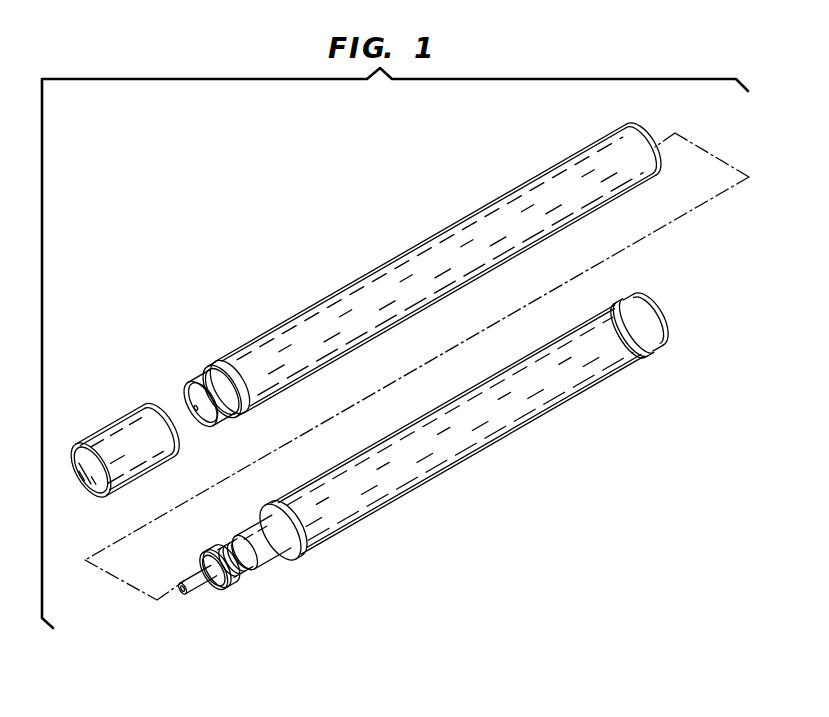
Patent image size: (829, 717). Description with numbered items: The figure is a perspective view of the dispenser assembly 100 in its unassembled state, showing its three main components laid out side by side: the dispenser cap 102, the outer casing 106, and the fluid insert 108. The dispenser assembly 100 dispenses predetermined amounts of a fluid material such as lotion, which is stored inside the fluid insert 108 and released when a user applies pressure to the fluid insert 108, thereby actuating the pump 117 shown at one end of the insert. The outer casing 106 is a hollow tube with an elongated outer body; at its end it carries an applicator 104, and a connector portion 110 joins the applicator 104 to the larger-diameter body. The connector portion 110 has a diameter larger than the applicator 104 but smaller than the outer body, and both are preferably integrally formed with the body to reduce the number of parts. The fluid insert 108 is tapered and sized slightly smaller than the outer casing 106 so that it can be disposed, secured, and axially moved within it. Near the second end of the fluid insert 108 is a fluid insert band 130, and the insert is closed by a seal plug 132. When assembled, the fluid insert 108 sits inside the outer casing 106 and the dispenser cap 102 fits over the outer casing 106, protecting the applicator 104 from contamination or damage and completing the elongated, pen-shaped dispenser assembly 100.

The dispenser assembly 100 is at (455, 176).
The dispenser cap 102 is at (123, 393).
The applicator 104 is at (183, 371).
The outer casing 106 is at (393, 243).
The fluid insert 108 is at (475, 479).
The connector portion 110 is at (207, 368).
The pump 117 is at (263, 582).
The fluid insert band 130 is at (636, 358).
The seal plug 132 is at (668, 318).